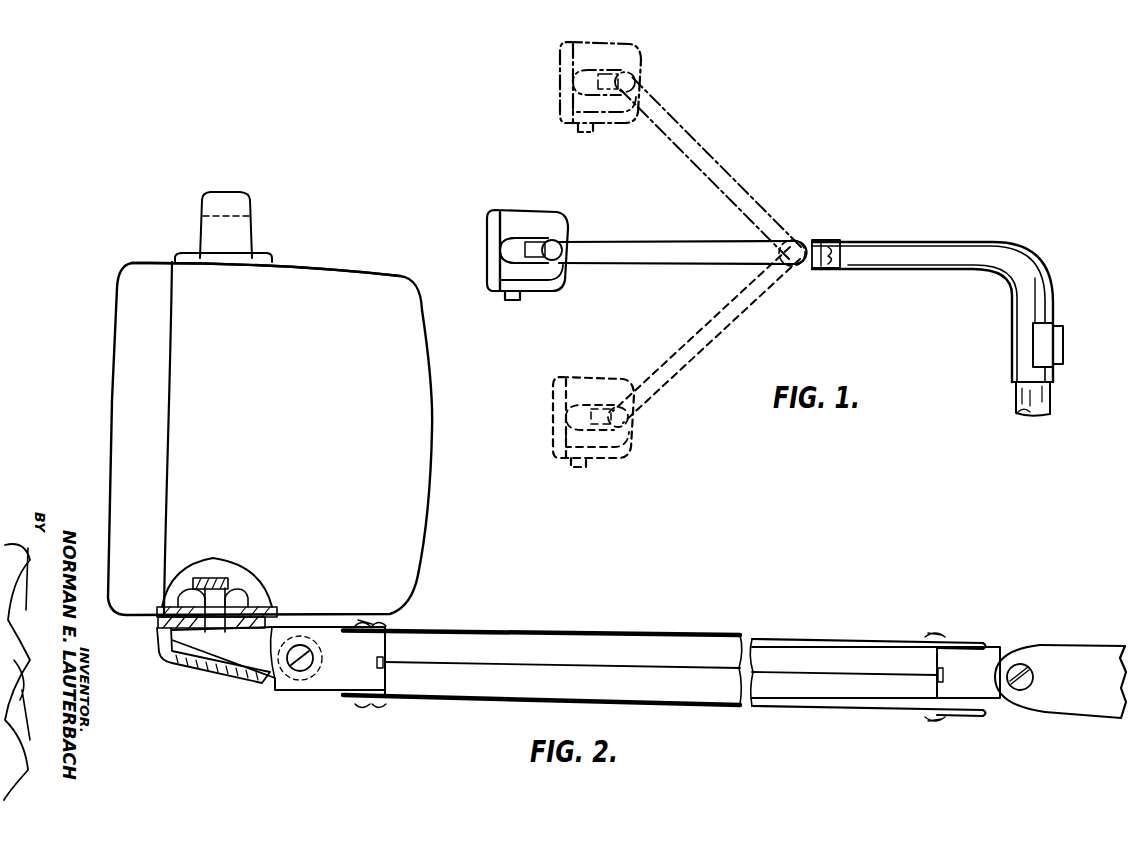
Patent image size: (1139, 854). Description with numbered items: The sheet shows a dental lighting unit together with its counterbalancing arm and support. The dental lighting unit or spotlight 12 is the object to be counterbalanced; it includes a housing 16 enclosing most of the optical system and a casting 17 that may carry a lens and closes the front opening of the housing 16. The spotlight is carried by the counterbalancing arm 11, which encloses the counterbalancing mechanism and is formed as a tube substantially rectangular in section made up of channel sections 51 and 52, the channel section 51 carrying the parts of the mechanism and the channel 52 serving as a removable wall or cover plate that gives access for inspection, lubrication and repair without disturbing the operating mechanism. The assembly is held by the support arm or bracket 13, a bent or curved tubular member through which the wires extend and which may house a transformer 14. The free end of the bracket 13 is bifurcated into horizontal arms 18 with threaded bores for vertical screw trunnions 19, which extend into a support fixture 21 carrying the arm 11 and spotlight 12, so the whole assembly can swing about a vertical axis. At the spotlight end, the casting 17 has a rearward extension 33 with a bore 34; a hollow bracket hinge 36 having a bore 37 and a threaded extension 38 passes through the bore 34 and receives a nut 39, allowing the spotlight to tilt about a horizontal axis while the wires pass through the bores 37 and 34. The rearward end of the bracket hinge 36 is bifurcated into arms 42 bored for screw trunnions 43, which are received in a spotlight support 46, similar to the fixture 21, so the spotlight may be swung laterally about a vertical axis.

In FIG. 1, the counterbalancing arm 11 is at (677, 238).
In FIG. 2, the counterbalancing arm 11 is at (664, 655).
In FIG. 1, the dental lighting unit or spotlight 12 is at (570, 216).
In FIG. 2, the dental lighting unit or spotlight 12 is at (444, 464).
In FIG. 1, the support arm or bracket 13 is at (1017, 242).
In FIG. 2, the support arm or bracket 13 is at (1073, 642).
In FIG. 1, the transformer 14 is at (1025, 345).
In FIG. 1, the housing 16 is at (553, 273).
In FIG. 2, the housing 16 is at (326, 274).
In FIG. 1, the casting 17 is at (488, 255).
In FIG. 2, the casting 17 is at (114, 353).
In FIG. 2, the arms 18 is at (1047, 704).
In FIG. 2, the screw trunnions 19 is at (1032, 677).
In FIG. 2, the support fixture 21 is at (987, 655).
In FIG. 2, the rearward extension 33 is at (162, 628).
In FIG. 2, the bore 34 is at (259, 607).
In FIG. 2, the bracket hinge 36 is at (191, 657).
In FIG. 2, the bore 37 is at (206, 627).
In FIG. 2, the threaded extension 38 is at (229, 582).
In FIG. 2, the nut 39 is at (188, 596).
In FIG. 2, the arms 42 is at (277, 673).
In FIG. 2, the screw trunnions 43 is at (298, 670).
In FIG. 2, the spotlight support 46 is at (343, 674).
In FIG. 2, the channel section 51 is at (689, 641).
In FIG. 2, the channel section 52 is at (703, 694).